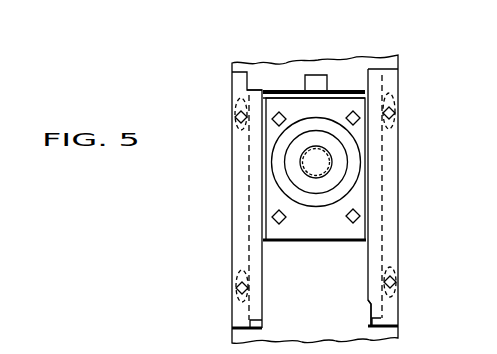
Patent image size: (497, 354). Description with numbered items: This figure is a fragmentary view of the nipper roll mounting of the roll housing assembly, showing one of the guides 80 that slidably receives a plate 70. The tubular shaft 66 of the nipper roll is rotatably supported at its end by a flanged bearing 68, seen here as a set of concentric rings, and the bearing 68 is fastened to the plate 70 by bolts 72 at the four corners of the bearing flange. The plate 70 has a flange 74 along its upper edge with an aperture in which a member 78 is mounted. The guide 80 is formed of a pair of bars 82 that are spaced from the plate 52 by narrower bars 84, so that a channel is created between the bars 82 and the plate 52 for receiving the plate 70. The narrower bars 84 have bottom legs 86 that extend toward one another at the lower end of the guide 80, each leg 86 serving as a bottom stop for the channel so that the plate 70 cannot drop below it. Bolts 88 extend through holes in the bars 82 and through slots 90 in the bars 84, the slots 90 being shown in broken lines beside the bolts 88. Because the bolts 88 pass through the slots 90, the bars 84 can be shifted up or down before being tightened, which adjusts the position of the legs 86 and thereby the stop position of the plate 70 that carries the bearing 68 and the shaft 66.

The plate 52 is at (292, 67).
The tubular shaft 66 is at (312, 163).
The flanged bearing 68 is at (284, 241).
The plate 70 is at (257, 88).
The bolt 72 is at (349, 118).
The flange 74 is at (277, 92).
The member 78 is at (338, 58).
The guide 80 is at (228, 163).
The bar 82 is at (232, 243).
The narrower bar 84 is at (250, 316).
The bottom leg 86 is at (263, 320).
The bolt 88 is at (235, 117).
The slot 90 is at (236, 100).